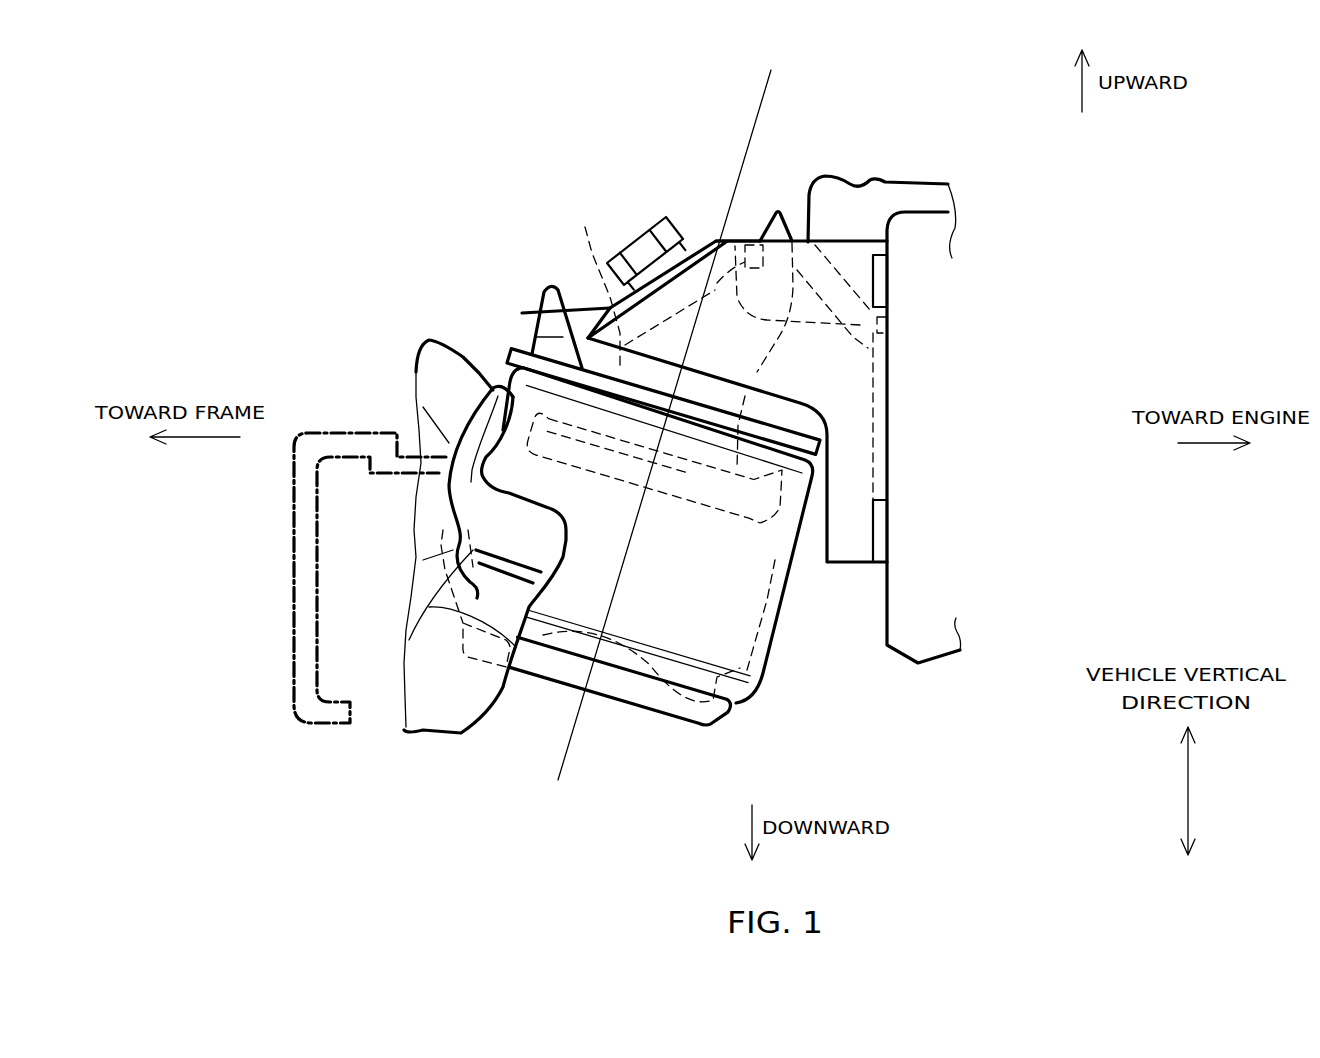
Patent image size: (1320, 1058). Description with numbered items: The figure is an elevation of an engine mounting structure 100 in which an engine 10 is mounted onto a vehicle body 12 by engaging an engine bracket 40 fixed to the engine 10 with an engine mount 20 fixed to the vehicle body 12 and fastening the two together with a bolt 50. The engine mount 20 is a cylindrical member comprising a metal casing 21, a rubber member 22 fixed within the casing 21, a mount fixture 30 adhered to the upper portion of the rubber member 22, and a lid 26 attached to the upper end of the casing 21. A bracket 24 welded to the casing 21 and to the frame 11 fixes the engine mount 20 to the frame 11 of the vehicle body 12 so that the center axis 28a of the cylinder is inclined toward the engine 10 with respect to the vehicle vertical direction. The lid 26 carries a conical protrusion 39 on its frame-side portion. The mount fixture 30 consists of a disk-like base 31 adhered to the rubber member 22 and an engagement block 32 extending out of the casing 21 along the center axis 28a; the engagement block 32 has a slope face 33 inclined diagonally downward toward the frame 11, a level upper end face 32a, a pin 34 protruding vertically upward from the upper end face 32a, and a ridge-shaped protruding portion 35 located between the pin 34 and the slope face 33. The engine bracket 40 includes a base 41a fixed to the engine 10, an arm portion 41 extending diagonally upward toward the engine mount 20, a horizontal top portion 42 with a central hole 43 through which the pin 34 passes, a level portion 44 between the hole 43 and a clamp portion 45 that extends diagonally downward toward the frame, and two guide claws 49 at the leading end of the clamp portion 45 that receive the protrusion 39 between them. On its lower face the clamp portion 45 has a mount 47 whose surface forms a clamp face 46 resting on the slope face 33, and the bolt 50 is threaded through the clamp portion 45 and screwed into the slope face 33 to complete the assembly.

The engine mounting structure 100 is at (376, 152).
The engine 10 is at (935, 242).
The frame 11 is at (327, 727).
The vehicle body 12 is at (398, 507).
The engine mount 20 is at (792, 678).
The casing 21 is at (780, 623).
The rubber member 22 is at (732, 548).
The bracket 24 is at (478, 345).
The lid 26 is at (503, 385).
The center axis 28a is at (767, 83).
The mount fixture 30 is at (775, 342).
The base 31 is at (720, 518).
The engagement block 32 is at (757, 358).
The upper end face 32a is at (792, 241).
The slope face 33 is at (585, 227).
The pin 34 is at (788, 226).
The protruding portion 35 is at (860, 325).
The protrusion 39 is at (550, 280).
The engine bracket 40 is at (878, 230).
The arm portion 41 is at (892, 288).
The base 41a is at (878, 500).
The top portion 42 is at (757, 218).
The hole 43 is at (752, 241).
The level portion 44 is at (735, 240).
The clamp portion 45 is at (703, 235).
The clamp face 46 is at (654, 468).
The mount 47 is at (616, 451).
The guide claws 49 is at (512, 345).
The bolt 50 is at (636, 236).